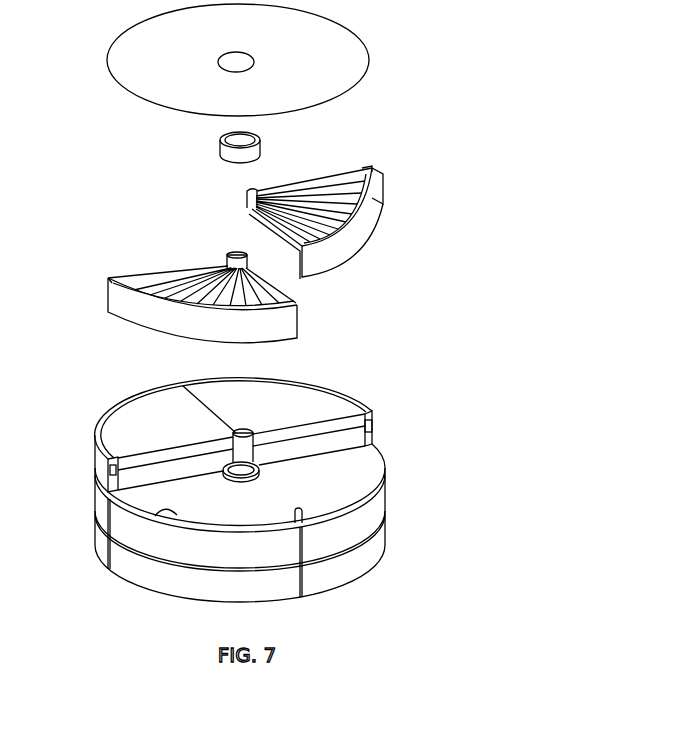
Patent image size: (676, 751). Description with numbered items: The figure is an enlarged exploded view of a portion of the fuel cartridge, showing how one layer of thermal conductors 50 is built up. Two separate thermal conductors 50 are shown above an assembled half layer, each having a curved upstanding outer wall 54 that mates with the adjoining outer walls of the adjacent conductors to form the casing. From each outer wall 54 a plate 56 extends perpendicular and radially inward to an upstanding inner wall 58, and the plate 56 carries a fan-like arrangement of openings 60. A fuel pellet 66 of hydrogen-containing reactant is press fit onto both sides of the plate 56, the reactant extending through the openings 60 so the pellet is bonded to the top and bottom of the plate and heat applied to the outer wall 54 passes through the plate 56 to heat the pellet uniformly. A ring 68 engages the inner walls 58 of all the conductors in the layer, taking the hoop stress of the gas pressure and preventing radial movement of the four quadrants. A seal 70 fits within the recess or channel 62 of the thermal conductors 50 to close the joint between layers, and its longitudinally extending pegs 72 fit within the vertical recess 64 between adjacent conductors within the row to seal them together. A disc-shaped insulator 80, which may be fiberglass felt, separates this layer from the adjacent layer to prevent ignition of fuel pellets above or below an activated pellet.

The thermal conductor 50 is at (392, 177).
The outer wall 54 is at (377, 223).
The plate 56 is at (315, 193).
The inner wall 58 is at (253, 192).
The openings 60 is at (353, 198).
The recess or channel 62 is at (383, 197).
The vertical recess 64 is at (295, 268).
The fuel pellet 66 is at (147, 412).
The ring 68 is at (222, 135).
The seal 70 is at (163, 508).
The pegs 72 is at (107, 468).
The insulator 80 is at (348, 46).